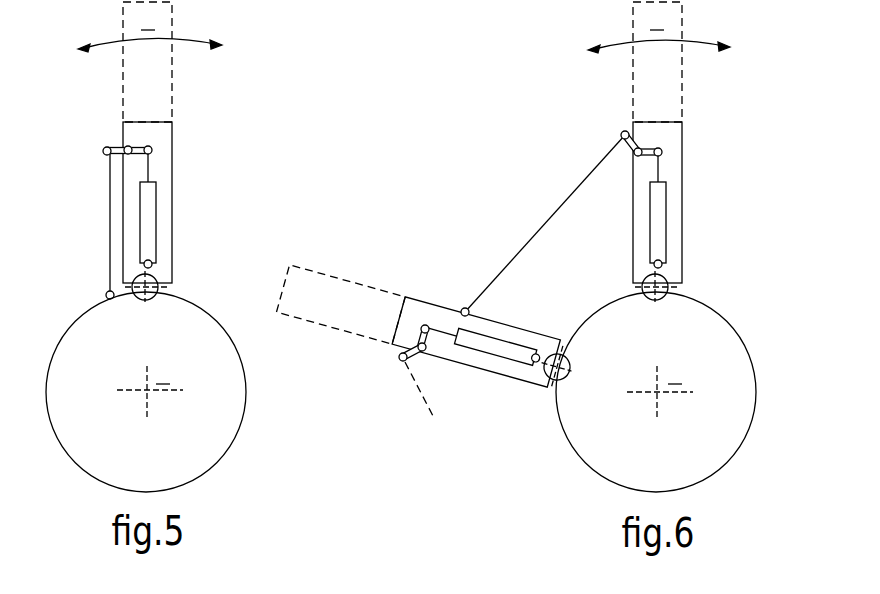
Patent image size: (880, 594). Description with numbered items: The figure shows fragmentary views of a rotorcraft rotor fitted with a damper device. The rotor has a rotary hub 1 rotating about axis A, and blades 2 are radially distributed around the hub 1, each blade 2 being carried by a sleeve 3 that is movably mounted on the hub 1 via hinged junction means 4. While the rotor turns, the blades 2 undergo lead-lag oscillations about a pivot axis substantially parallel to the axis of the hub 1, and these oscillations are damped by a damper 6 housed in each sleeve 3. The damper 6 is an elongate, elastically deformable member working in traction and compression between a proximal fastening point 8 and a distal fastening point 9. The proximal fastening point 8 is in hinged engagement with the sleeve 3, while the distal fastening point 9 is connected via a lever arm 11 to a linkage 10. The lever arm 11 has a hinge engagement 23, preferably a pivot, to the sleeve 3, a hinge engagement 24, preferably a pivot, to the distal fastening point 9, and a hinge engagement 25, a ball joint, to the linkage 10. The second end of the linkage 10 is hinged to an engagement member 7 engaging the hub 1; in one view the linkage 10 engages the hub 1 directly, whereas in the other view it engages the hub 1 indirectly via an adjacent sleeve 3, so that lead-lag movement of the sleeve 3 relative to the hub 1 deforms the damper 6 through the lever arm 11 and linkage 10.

In FIG. 5, the rotary hub 1 is at (56, 338).
In FIG. 6, the rotary hub 1 is at (572, 460).
In FIG. 5, the blade 2 is at (172, 77).
In FIG. 6, the blade 2 is at (682, 77).
In FIG. 5, the sleeve 3 is at (172, 228).
In FIG. 6, the sleeve 3 is at (682, 232).
In FIG. 5, the hinged junction means 4 is at (158, 292).
In FIG. 6, the hinged junction means 4 is at (668, 292).
In FIG. 5, the damper 6 is at (156, 200).
In FIG. 6, the damper 6 is at (666, 200).
In FIG. 5, the engagement member 7 is at (106, 295).
In FIG. 6, the engagement member 7 is at (463, 308).
In FIG. 5, the proximal fastening point 8 is at (152, 265).
In FIG. 6, the proximal fastening point 8 is at (662, 265).
In FIG. 5, the distal fastening point 9 is at (152, 152).
In FIG. 6, the distal fastening point 9 is at (662, 152).
In FIG. 5, the hinge engagement 24 is at (199, 127).
In FIG. 6, the hinge engagement 24 is at (565, 216).
In FIG. 5, the linkage 10 is at (109, 248).
In FIG. 6, the linkage 10 is at (545, 223).
In FIG. 5, the lever arm 11 is at (111, 163).
In FIG. 6, the lever arm 11 is at (624, 158).
In FIG. 5, the hinge engagement 23 is at (126, 149).
In FIG. 6, the hinge engagement 23 is at (638, 150).
In FIG. 5, the hinge engagement 25 is at (104, 151).
In FIG. 6, the hinge engagement 25 is at (621, 133).